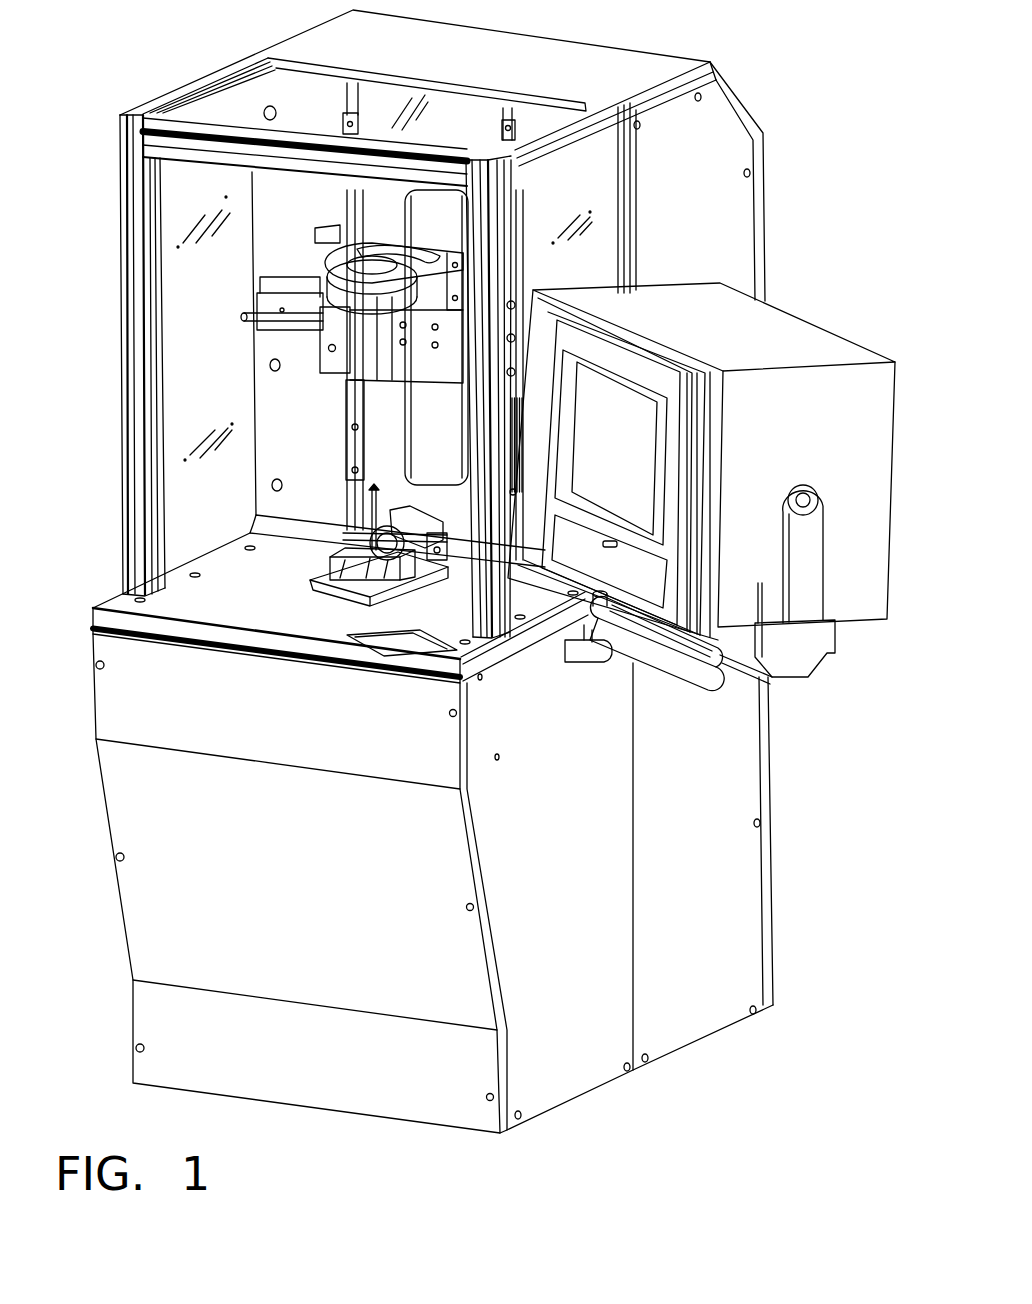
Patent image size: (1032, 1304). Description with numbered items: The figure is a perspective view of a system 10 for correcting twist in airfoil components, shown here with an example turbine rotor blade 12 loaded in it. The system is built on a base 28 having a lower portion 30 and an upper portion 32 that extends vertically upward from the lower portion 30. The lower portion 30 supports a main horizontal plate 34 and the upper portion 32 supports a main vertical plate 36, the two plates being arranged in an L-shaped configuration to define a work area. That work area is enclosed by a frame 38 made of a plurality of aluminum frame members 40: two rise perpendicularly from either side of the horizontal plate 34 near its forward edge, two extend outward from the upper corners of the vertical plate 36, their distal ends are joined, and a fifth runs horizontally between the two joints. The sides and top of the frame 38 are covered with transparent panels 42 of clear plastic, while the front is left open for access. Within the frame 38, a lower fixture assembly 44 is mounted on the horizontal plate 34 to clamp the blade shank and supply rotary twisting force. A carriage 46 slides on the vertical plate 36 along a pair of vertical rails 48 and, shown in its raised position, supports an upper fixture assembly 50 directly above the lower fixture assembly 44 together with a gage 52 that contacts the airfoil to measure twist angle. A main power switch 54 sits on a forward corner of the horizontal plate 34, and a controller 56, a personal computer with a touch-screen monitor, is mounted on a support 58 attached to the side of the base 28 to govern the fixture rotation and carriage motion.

The system 10 is at (808, 288).
The turbine rotor blade 12 is at (373, 504).
The base 28 is at (747, 853).
The lower portion 30 is at (140, 898).
The upper portion 32 is at (737, 206).
The main horizontal plate 34 is at (107, 620).
The main vertical plate 36 is at (600, 192).
The frame 38 is at (119, 124).
The frame members 40 is at (200, 78).
The transparent panels 42 is at (379, 102).
The lower fixture assembly 44 is at (357, 561).
The carriage 46 is at (328, 367).
The rails 48 is at (345, 101).
The upper fixture assembly 50 is at (390, 307).
The gage 52 is at (308, 320).
The main power switch 54 is at (377, 640).
The controller 56 is at (862, 378).
The support 58 is at (683, 670).